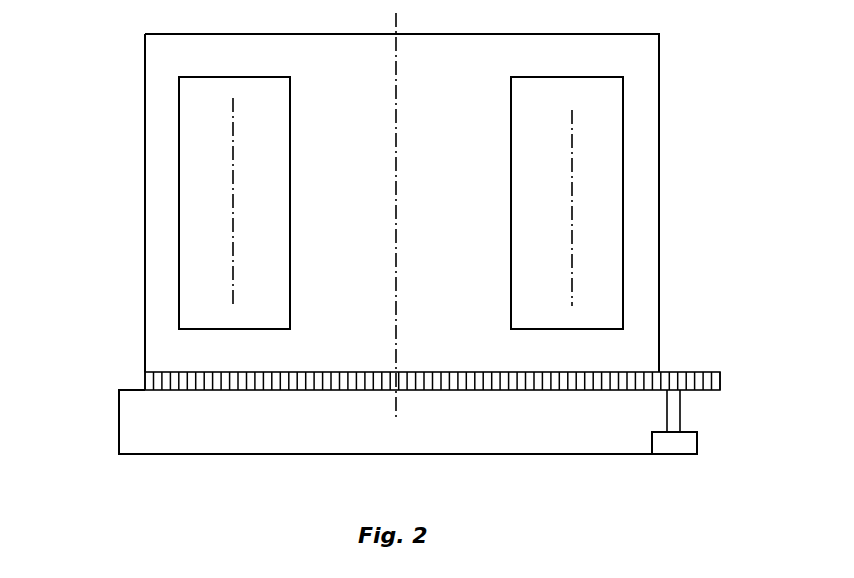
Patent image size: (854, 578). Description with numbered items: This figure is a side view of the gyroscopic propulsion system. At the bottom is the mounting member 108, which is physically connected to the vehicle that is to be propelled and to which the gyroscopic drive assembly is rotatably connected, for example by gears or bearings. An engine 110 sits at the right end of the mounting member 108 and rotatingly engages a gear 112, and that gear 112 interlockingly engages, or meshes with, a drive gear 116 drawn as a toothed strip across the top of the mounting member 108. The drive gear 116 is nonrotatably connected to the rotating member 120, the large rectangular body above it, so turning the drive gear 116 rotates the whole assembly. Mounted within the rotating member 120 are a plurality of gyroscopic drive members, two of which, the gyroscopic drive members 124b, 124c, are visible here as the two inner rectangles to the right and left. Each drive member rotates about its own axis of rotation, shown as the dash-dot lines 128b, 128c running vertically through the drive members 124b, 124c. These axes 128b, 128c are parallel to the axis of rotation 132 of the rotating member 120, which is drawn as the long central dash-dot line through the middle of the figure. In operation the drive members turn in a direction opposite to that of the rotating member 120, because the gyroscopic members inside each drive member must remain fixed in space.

The mounting member 108 is at (119, 430).
The engine 110 is at (697, 438).
The gear 112 is at (720, 372).
The drive gear 116 is at (145, 380).
The rotating member 120 is at (659, 64).
The gyroscopic drive member 124b is at (603, 213).
The gyroscopic drive member 124c is at (213, 231).
The axis of rotation 128b is at (573, 128).
The axis of rotation 128c is at (233, 128).
The axis of rotation 132 is at (397, 90).